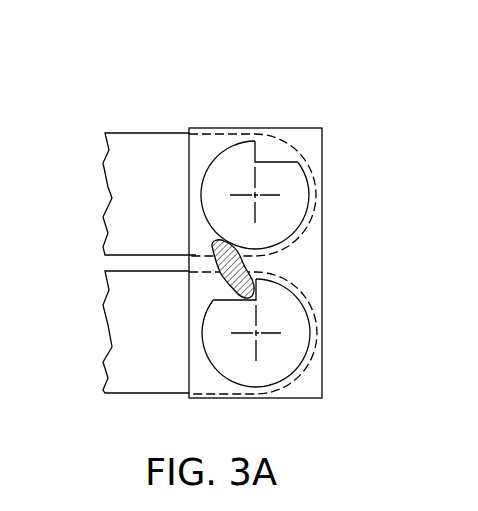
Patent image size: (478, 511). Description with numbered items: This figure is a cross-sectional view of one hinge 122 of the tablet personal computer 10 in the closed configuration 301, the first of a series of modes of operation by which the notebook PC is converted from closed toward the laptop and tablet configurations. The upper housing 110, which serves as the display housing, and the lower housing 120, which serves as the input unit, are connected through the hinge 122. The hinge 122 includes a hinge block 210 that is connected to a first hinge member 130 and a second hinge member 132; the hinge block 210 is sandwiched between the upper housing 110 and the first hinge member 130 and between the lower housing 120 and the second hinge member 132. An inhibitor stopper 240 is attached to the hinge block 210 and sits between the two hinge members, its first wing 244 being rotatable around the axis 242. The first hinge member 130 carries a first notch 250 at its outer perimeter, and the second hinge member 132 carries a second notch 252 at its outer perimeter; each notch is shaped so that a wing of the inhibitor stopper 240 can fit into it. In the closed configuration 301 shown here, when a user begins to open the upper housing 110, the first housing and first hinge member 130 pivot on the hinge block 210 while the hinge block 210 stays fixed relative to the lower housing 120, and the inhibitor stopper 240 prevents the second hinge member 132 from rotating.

The tablet personal computer 10 is at (117, 80).
The closed configuration 301 is at (210, 112).
The upper housing 110 is at (112, 200).
The lower housing 120 is at (112, 348).
The hinge 122 is at (332, 238).
The first hinge member 130 is at (288, 168).
The second hinge member 132 is at (235, 373).
The hinge block 210 is at (323, 165).
The inhibitor stopper 240 is at (255, 264).
The axis 242 is at (215, 262).
The first wing 244 is at (212, 240).
The first notch 250 is at (268, 160).
The second notch 252 is at (211, 301).